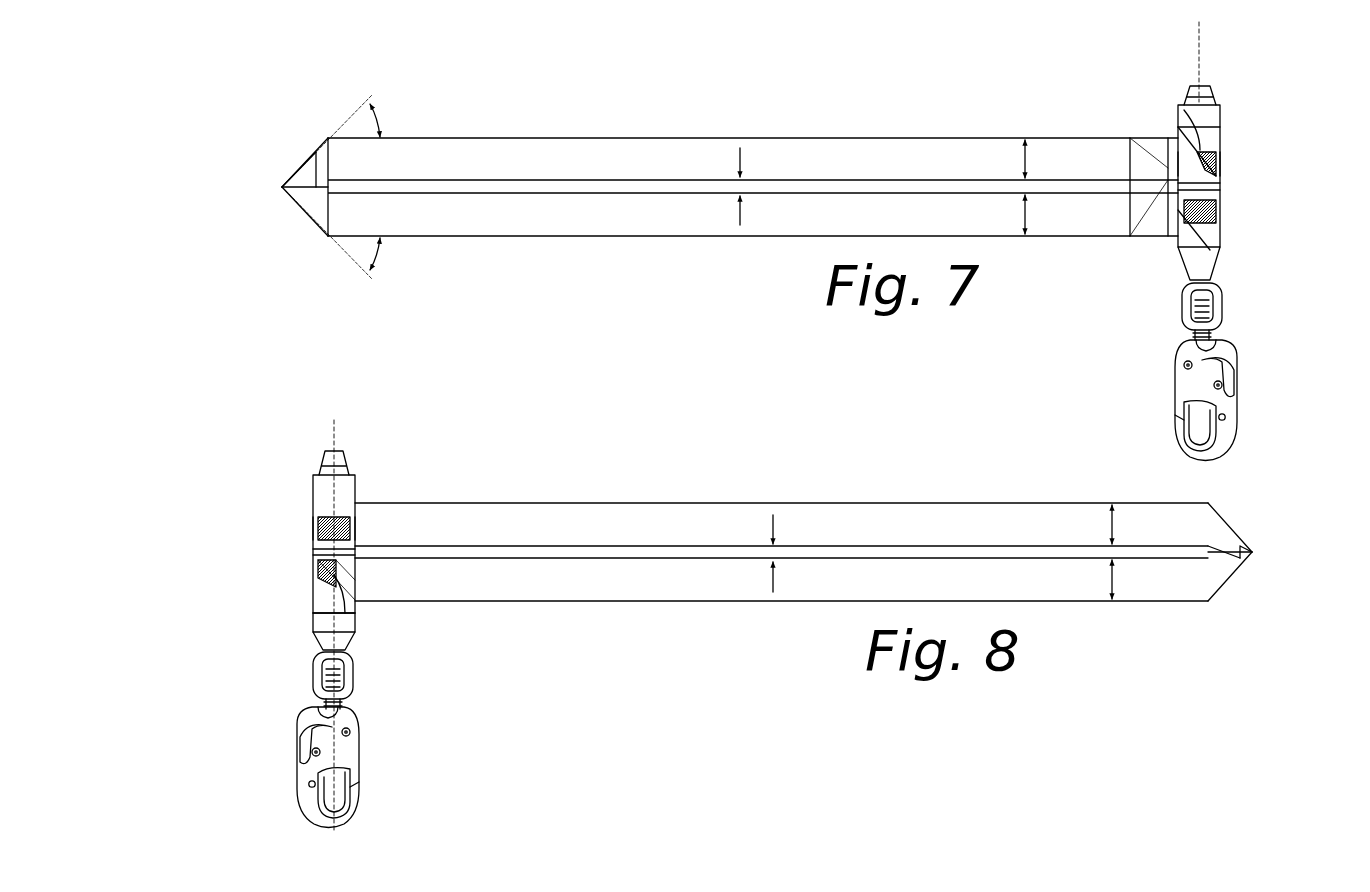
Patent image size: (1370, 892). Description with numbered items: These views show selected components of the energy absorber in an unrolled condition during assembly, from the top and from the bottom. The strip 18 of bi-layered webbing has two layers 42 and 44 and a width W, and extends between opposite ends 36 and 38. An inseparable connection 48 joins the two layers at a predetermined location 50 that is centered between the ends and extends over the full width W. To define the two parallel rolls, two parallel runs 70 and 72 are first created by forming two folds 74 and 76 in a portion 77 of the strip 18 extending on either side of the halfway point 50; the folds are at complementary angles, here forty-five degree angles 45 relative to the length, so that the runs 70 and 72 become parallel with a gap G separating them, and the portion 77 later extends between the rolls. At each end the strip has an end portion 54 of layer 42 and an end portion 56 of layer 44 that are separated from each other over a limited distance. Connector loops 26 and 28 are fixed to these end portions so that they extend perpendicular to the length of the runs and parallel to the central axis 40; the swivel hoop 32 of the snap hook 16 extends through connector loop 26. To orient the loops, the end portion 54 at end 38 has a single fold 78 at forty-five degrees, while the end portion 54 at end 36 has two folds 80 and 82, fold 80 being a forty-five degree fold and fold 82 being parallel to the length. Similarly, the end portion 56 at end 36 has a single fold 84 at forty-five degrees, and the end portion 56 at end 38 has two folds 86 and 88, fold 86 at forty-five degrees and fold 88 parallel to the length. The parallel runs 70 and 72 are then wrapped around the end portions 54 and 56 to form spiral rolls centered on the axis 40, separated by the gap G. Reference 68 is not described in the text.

In FIG. 7, the snap hook 16 is at (1237, 392).
In FIG. 8, the snap hook 16 is at (298, 757).
In FIG. 7, the strip 18 is at (620, 114).
In FIG. 8, the strip 18 is at (692, 475).
In FIG. 7, the connector loop 26 is at (1210, 260).
In FIG. 8, the connector loop 26 is at (325, 625).
In FIG. 7, the connector loop 28 is at (1215, 98).
In FIG. 8, the connector loop 28 is at (327, 464).
In FIG. 7, the swivel hoop 32 is at (1222, 300).
In FIG. 8, the swivel hoop 32 is at (313, 668).
In FIG. 7, the end of strip 36 is at (1225, 205).
In FIG. 8, the end of strip 36 is at (310, 570).
In FIG. 7, the end of strip 38 is at (1225, 155).
In FIG. 8, the end of strip 38 is at (310, 527).
In FIG. 7, the central axis 40 is at (1199, 50).
In FIG. 8, the central axis 40 is at (340, 787).
In FIG. 7, the layer of webbing 42 is at (603, 214).
In FIG. 8, the layer of webbing 44 is at (713, 585).
In FIG. 7, the fold angle 45 is at (385, 110).
In FIG. 7, the inseparable connection 48 is at (314, 152).
In FIG. 8, the inseparable connection 48 is at (1240, 560).
In FIG. 7, the predetermined location 50 is at (282, 187).
In FIG. 8, the predetermined location 50 is at (1252, 552).
In FIG. 7, the end portion of layer 54 is at (1180, 258).
In FIG. 8, the end portion of layer 54 is at (325, 600).
In FIG. 7, the end portion of layer 56 is at (1220, 172).
In FIG. 7, the opening side wall 68 is at (1210, 160).
In FIG. 8, the opening side wall 68 is at (322, 517).
In FIG. 7, the parallel run 70 is at (519, 214).
In FIG. 8, the parallel run 70 is at (627, 585).
In FIG. 7, the parallel run 72 is at (497, 155).
In FIG. 8, the parallel run 72 is at (606, 522).
In FIG. 7, the fold 74 is at (310, 222).
In FIG. 8, the fold 74 is at (1232, 580).
In FIG. 7, the fold 76 is at (318, 150).
In FIG. 8, the fold 76 is at (1232, 523).
In FIG. 7, the portion of strip 77 is at (298, 207).
In FIG. 8, the portion of strip 77 is at (1215, 548).
In FIG. 7, the single fold 78 is at (1186, 128).
In FIG. 8, the fold 80 is at (340, 575).
In FIG. 8, the fold 82 is at (350, 572).
In FIG. 8, the single fold 84 is at (362, 628).
In FIG. 7, the fold 86 is at (1168, 165).
In FIG. 7, the fold 88 is at (1168, 182).
In FIG. 7, the width W is at (1020, 160).
In FIG. 8, the width W is at (1108, 528).
In FIG. 7, the gap G is at (745, 188).
In FIG. 8, the gap G is at (778, 554).